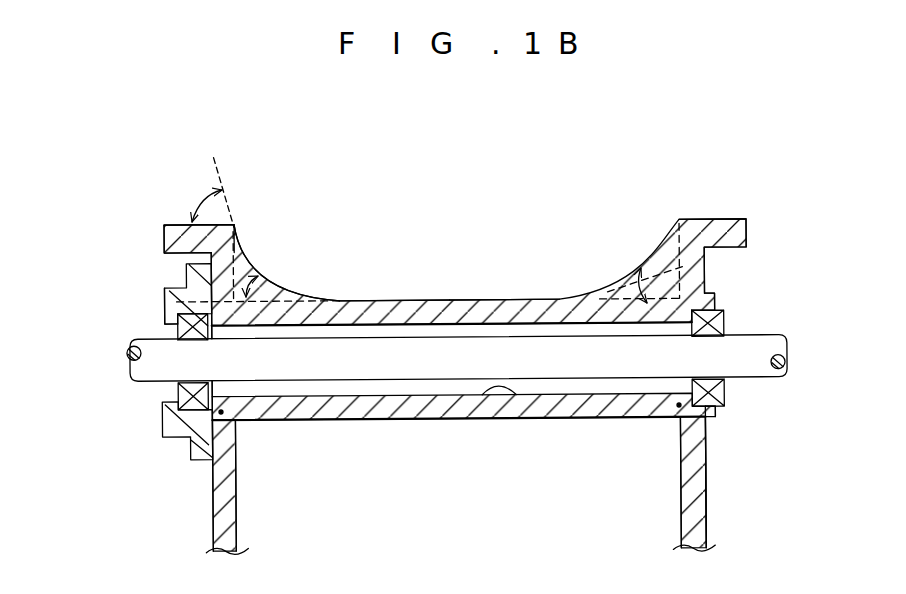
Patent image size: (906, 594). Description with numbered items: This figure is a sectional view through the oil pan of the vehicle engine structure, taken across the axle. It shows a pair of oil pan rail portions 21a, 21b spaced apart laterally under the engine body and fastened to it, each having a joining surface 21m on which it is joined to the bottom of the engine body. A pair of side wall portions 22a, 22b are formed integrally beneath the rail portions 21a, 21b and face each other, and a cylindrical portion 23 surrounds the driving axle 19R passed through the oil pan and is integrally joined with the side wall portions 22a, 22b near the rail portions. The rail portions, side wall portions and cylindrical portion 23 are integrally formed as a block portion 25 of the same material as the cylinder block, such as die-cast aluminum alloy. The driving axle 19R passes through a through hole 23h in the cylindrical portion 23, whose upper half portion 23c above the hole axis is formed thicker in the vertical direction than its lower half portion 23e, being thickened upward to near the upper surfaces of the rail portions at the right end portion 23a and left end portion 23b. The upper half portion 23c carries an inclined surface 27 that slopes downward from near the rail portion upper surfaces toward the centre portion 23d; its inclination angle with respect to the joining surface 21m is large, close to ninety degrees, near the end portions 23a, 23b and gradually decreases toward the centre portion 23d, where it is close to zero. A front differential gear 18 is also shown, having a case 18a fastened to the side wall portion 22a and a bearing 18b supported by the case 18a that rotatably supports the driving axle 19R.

The front differential gear 18 is at (161, 287).
The case 18a is at (164, 306).
The bearing 18b is at (177, 397).
The driving axle 19R is at (750, 336).
The oil pan rail portion 21a is at (167, 225).
The oil pan rail portion 21b is at (698, 219).
The joining surface 21m is at (185, 225).
The side wall portion 22a is at (212, 510).
The side wall portion 22b is at (708, 493).
The cylindrical portion 23 is at (373, 293).
The right end portion 23a is at (222, 413).
The left end portion 23b is at (678, 406).
The upper half portion 23c is at (542, 299).
The centre portion 23d is at (445, 298).
The lower half portion 23e is at (455, 420).
The through hole 23h is at (521, 396).
The block portion 25 is at (710, 452).
The inclined surface 27 is at (272, 283).